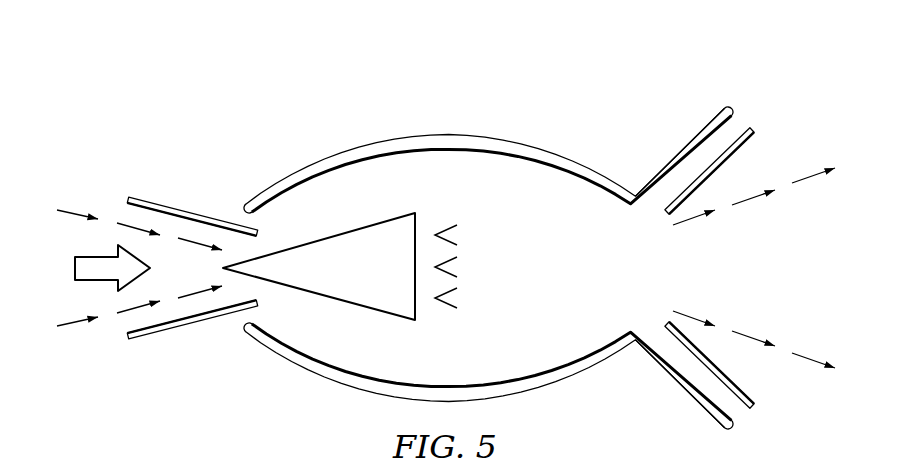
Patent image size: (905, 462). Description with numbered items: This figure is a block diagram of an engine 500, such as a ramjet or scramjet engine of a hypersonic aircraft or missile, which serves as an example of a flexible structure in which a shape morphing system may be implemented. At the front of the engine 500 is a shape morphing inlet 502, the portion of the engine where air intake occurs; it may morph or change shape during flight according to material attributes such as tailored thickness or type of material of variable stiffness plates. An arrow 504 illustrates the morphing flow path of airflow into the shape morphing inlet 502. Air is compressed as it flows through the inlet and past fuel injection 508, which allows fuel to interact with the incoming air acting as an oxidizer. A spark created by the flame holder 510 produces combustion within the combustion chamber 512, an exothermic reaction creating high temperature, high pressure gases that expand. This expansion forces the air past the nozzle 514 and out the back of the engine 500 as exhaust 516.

The engine 500 is at (289, 99).
The shape morphing inlet 502 is at (213, 176).
The arrow 504 is at (75, 268).
The fuel injection 508 is at (318, 294).
The flame holder 510 is at (445, 212).
The combustion chamber 512 is at (558, 300).
The nozzle 514 is at (630, 180).
The exhaust 516 is at (742, 118).